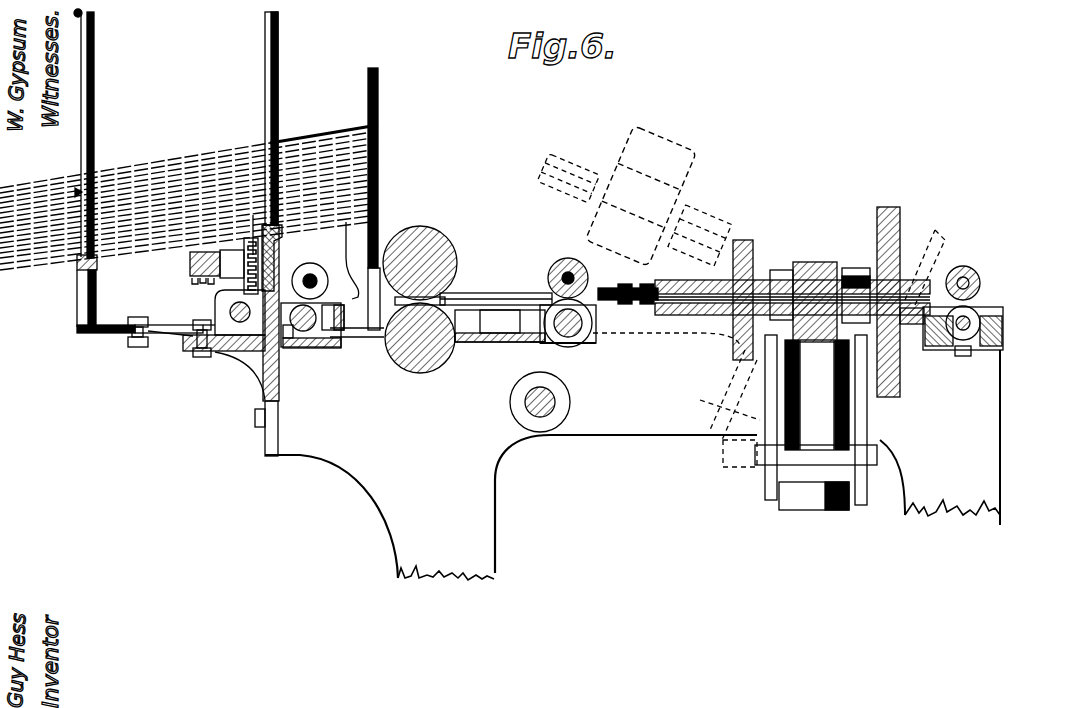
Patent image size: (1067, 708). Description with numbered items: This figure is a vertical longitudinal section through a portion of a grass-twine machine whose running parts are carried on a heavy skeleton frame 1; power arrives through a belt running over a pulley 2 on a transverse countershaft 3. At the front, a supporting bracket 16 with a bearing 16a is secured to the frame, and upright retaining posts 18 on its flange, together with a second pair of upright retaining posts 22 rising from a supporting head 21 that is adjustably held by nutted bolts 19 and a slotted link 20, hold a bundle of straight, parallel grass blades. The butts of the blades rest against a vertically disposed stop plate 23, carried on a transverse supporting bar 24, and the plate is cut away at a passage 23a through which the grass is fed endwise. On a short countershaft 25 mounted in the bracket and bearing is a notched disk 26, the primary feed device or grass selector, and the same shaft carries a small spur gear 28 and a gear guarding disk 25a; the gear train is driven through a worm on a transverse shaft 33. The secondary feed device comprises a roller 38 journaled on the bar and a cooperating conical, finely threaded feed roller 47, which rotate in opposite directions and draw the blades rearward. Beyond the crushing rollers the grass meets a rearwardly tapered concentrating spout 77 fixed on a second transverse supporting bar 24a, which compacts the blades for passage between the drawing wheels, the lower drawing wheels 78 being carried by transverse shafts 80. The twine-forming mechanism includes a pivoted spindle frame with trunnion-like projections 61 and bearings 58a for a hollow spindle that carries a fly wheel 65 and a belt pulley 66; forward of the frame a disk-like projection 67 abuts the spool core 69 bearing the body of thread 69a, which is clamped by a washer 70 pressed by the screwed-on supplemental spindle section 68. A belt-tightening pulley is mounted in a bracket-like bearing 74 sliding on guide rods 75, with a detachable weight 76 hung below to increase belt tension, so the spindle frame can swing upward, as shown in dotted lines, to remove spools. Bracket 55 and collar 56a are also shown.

The skeleton frame 1 is at (497, 542).
The pulley 2 is at (190, 160).
The countershaft 3 is at (522, 416).
The supporting bracket 16 is at (248, 354).
The bearing 16a is at (193, 299).
The upright retaining posts 18 is at (279, 34).
The nutted bolts 19 is at (130, 346).
The slotted link 20 is at (170, 340).
The supporting head 21 is at (77, 302).
The upright retaining posts 22 is at (95, 74).
The stop plate 23 is at (378, 126).
The cut-away passage 23a is at (345, 228).
The transverse supporting bar 24 is at (322, 350).
The transverse supporting bar 24a is at (521, 350).
The short countershaft 25 is at (188, 262).
The gear guarding disk 25a is at (248, 243).
The notched disk 26 is at (283, 232).
The small spur gear 28 is at (253, 214).
The transverse shaft 33 is at (212, 305).
The roller 38 is at (344, 313).
The feed roller 47 is at (330, 258).
The bracket 55 is at (962, 348).
The collar 56a is at (865, 268).
The bearings 58a is at (810, 262).
The trunnion-like projections 61 is at (668, 318).
The fly wheel 65 is at (890, 207).
The pulley 66 is at (828, 268).
The disk-like projection 67 is at (740, 240).
The supplemental spindle section 68 is at (568, 196).
The spool core 69 is at (735, 372).
The body of thread 69a is at (665, 150).
The washer 70 is at (648, 322).
The bracket-like bearing 74 is at (888, 450).
The guide rods 75 is at (809, 432).
The detachable weight 76 is at (806, 511).
The concentrating spout 77 is at (496, 292).
The lower drawing wheels 78 is at (576, 348).
The transverse shafts 80 is at (548, 346).